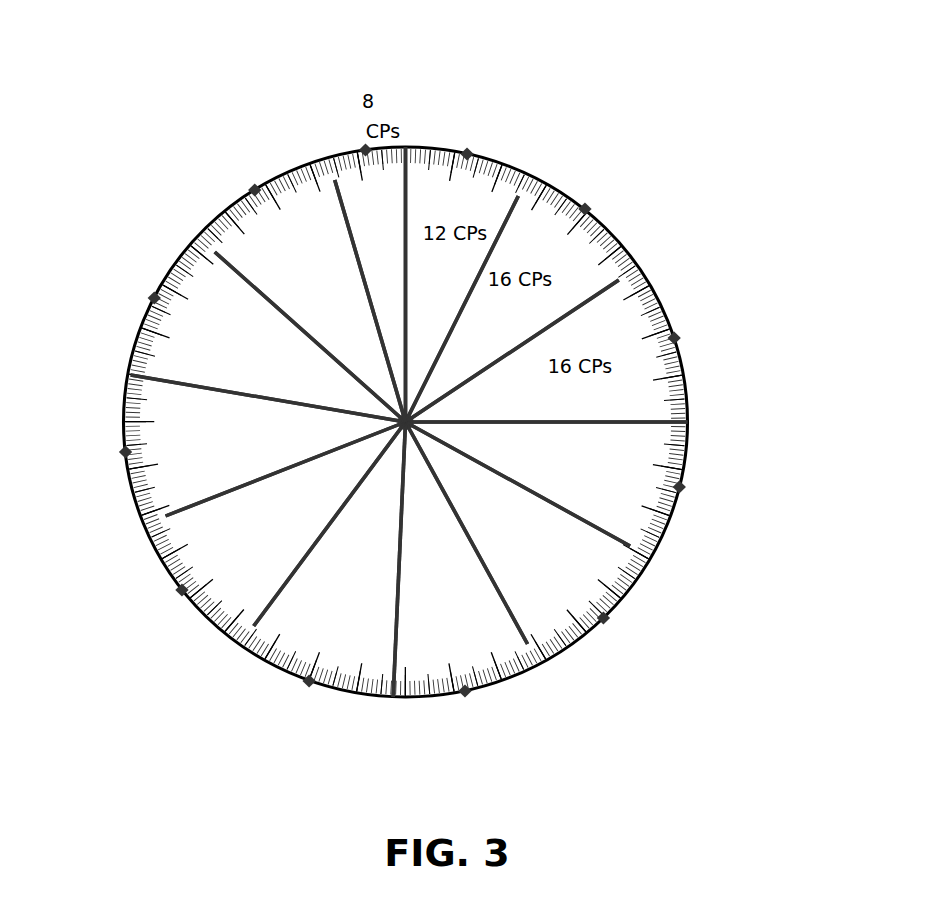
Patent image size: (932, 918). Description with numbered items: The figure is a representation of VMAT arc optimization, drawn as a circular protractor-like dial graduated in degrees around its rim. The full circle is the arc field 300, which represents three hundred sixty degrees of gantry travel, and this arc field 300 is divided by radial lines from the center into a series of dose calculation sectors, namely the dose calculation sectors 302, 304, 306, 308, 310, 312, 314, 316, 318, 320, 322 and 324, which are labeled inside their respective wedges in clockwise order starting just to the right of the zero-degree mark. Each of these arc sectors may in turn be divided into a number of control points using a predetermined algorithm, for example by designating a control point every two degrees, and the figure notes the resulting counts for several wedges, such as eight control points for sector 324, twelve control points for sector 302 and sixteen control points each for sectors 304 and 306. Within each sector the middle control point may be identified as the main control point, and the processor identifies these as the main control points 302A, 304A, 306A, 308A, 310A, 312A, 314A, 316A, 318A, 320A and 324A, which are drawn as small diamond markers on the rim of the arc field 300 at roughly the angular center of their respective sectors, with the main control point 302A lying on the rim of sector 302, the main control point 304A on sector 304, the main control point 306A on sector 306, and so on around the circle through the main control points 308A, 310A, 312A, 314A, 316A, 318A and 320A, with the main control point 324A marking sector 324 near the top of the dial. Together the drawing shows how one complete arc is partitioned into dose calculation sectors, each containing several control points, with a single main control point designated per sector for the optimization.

The arc field 300 is at (814, 136).
The dose calculation sector 302 is at (413, 301).
The dose calculation sector 304 is at (469, 339).
The dose calculation sector 306 is at (486, 401).
The dose calculation sector 308 is at (536, 469).
The dose calculation sector 310 is at (491, 539).
The dose calculation sector 312 is at (413, 566).
The dose calculation sector 314 is at (326, 579).
The dose calculation sector 316 is at (251, 539).
The dose calculation sector 318 is at (216, 454).
The dose calculation sector 320 is at (236, 366).
The dose calculation sector 322 is at (296, 301).
The dose calculation sector 324 is at (356, 244).
The main control point 302A is at (467, 154).
The main control point 304A is at (584, 209).
The main control point 306A is at (674, 338).
The main control point 308A is at (679, 487).
The main control point 310A is at (603, 618).
The main control point 312A is at (465, 691).
The main control point 314A is at (310, 681).
The main control point 316A is at (182, 590).
The main control point 318A is at (125, 452).
The main control point 320A is at (154, 298).
The main control point 324A is at (365, 150).